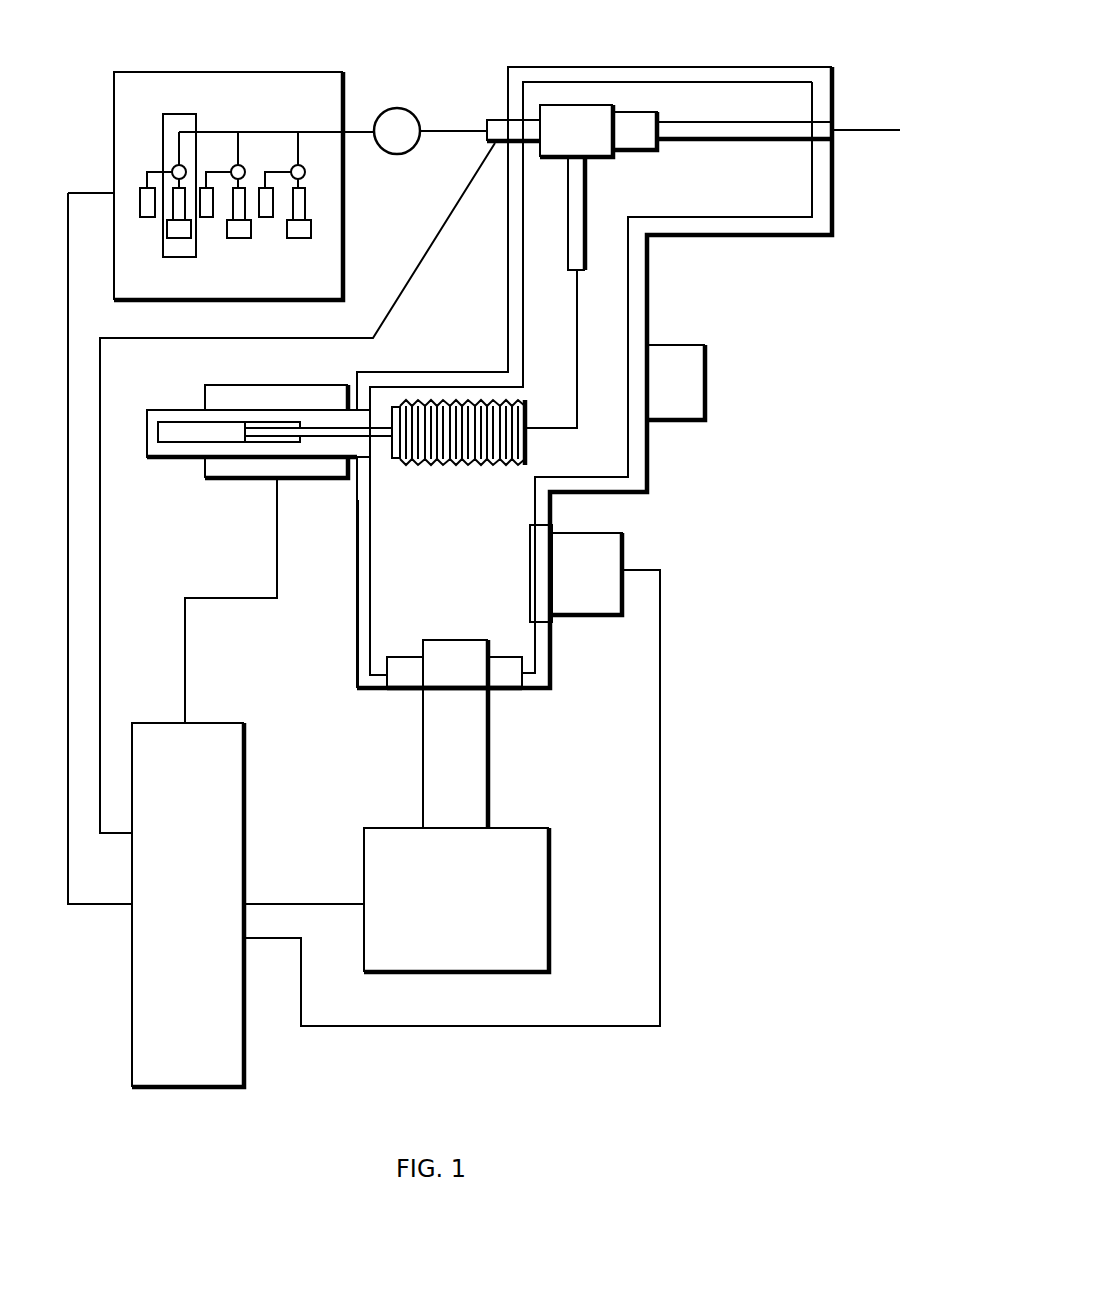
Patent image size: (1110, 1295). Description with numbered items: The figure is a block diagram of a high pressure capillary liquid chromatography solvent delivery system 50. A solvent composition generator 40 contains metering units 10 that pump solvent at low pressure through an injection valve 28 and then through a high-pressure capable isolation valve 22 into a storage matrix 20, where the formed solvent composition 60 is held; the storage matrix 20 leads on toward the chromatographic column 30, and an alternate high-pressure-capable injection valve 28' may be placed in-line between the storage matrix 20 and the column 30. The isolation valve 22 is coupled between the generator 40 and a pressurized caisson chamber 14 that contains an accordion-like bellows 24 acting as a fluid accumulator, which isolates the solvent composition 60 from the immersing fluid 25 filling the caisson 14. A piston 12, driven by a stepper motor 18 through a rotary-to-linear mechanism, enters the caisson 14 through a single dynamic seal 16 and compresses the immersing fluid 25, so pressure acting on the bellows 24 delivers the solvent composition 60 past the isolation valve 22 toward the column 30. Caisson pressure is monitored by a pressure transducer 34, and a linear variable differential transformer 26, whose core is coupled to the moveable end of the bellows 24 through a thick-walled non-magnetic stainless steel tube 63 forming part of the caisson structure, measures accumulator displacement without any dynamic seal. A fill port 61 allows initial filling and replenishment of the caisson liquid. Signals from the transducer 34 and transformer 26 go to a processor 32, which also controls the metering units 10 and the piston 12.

The metering unit 10 is at (180, 114).
The piston 12 is at (423, 752).
The pressurized caisson chamber 14 is at (508, 344).
The dynamic seal 16 is at (505, 678).
The stepper motor 18 is at (535, 903).
The storage matrix 20 is at (578, 250).
The isolation valve 22 is at (580, 118).
The bellows 24 is at (528, 444).
The immersing fluid 25 is at (447, 593).
The linear variable differential transformer 26 is at (230, 480).
The injection valve 28 is at (430, 110).
The high-pressure-capable injection valve 28' is at (649, 83).
The chromatographic column 30 is at (748, 128).
The processor 32 is at (200, 915).
The pressure transducer 34 is at (622, 551).
The solvent composition generator 40 is at (236, 72).
The high pressure capillary liquid chromatography solvent delivery system 50 is at (741, 758).
The solvent composition 60 is at (357, 131).
The fill port 61 is at (705, 373).
The thick-walled non-magnetic stainless steel tube 63 is at (198, 418).